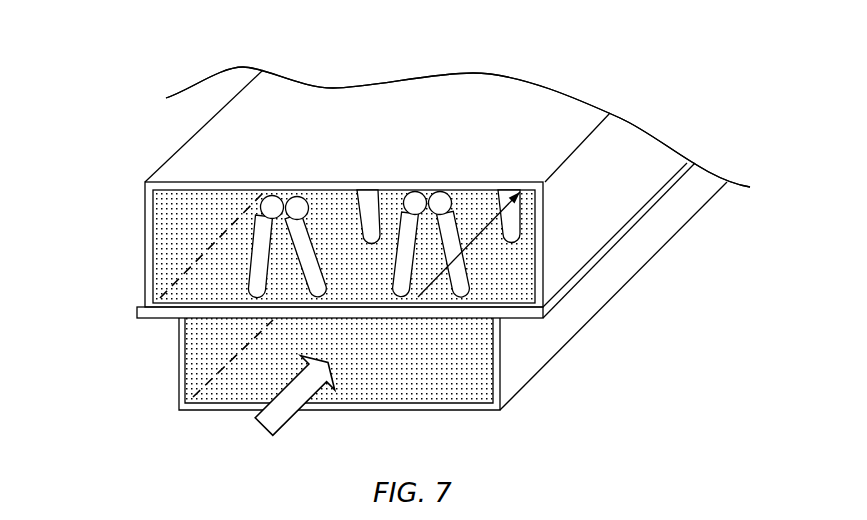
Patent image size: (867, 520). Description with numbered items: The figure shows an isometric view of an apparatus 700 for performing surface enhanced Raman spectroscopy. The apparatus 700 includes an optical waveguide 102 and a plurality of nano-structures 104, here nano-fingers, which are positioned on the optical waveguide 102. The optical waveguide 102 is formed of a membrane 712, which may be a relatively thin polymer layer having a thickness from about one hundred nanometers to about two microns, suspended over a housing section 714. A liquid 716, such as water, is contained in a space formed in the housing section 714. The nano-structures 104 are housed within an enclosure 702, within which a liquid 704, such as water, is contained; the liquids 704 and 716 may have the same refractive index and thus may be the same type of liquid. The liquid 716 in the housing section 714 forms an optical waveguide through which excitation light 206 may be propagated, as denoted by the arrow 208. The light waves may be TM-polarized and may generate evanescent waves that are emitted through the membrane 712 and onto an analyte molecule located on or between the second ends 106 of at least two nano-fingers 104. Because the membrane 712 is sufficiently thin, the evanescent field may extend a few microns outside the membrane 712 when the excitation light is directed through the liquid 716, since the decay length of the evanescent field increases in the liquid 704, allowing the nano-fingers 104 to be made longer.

The apparatus 700 is at (178, 53).
The enclosure 702 is at (440, 115).
The optical waveguide 102 is at (128, 259).
The nano-structures 104 is at (253, 232).
The second ends 106 is at (262, 198).
The liquid 704 is at (173, 262).
The membrane 712 is at (613, 247).
The housing section 714 is at (582, 327).
The liquid 716 is at (405, 390).
The arrow 208 is at (477, 243).
The excitation light 206 is at (303, 405).